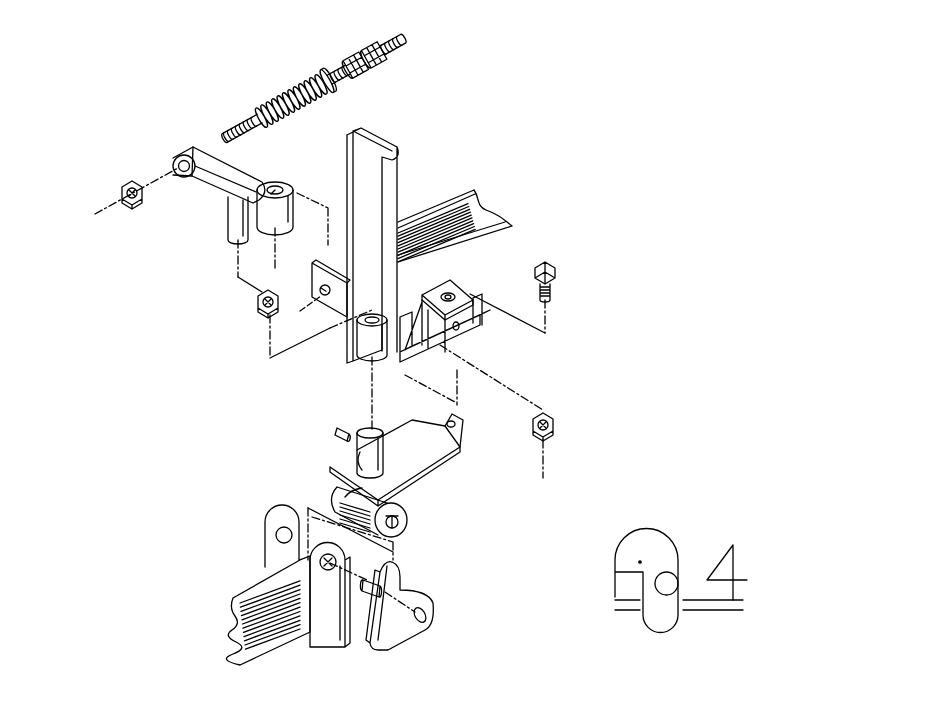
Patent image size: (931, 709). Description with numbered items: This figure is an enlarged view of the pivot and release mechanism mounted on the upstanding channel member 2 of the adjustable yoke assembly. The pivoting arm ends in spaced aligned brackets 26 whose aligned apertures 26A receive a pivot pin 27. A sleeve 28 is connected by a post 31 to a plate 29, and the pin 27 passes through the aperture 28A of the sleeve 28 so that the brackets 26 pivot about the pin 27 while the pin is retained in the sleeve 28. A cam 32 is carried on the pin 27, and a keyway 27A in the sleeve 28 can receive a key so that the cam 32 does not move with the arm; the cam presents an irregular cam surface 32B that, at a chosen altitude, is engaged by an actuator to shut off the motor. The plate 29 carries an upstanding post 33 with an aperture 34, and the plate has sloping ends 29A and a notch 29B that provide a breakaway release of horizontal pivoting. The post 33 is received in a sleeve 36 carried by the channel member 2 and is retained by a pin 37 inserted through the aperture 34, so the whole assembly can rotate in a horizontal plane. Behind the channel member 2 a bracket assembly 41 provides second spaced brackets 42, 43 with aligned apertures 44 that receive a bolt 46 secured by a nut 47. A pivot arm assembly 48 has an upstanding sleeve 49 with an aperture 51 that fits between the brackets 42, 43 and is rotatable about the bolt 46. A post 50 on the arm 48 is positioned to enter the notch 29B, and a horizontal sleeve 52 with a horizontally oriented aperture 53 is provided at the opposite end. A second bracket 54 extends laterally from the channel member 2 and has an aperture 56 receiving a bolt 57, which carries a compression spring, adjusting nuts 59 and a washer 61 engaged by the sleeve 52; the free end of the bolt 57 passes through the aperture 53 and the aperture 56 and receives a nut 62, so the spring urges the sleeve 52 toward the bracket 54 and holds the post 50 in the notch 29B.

The channel member 2 is at (405, 165).
The brackets 26 is at (295, 588).
The apertures 26A is at (282, 545).
The pivot pin 27 is at (400, 590).
The keyway 27A is at (398, 518).
The sleeve 28 is at (404, 514).
The aperture 28A is at (405, 525).
The plate 29 is at (417, 449).
The sloping ends 29A is at (448, 420).
The notch 29B is at (457, 424).
The post 31 is at (355, 500).
The cam 32 is at (431, 608).
The cam surface 32B is at (423, 575).
The upstanding post 33 is at (362, 461).
The aperture 34 is at (370, 453).
The sleeve 36 is at (365, 342).
The pin 37 is at (348, 428).
The bracket assembly 41 is at (455, 282).
The bracket 42 is at (445, 292).
The bracket 43 is at (470, 331).
The apertures 44 is at (455, 297).
The bolt 46 is at (552, 291).
The nut 47 is at (552, 421).
The pivot arm assembly 48 is at (193, 164).
The upstanding sleeve 49 is at (283, 194).
The post 50 is at (230, 216).
The aperture 51 is at (282, 187).
The horizontal sleeve 52 is at (190, 151).
The aperture 53 is at (174, 163).
The second bracket 54 is at (312, 281).
The aperture 56 is at (320, 290).
The bolt 57 is at (236, 130).
The adjusting nuts 59 is at (368, 46).
The washer 61 is at (267, 106).
The nut 62 is at (122, 191).